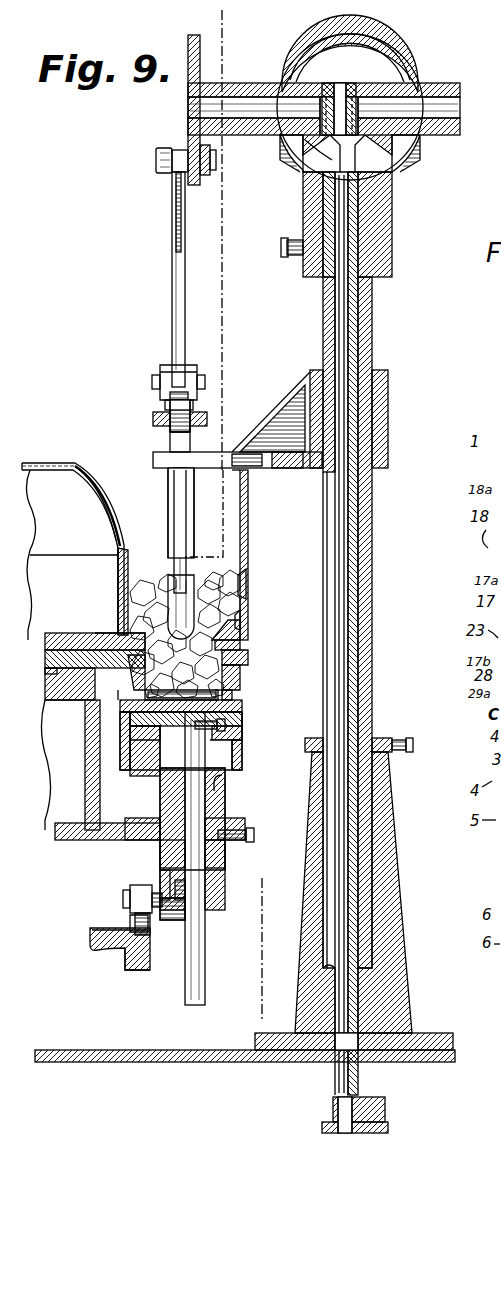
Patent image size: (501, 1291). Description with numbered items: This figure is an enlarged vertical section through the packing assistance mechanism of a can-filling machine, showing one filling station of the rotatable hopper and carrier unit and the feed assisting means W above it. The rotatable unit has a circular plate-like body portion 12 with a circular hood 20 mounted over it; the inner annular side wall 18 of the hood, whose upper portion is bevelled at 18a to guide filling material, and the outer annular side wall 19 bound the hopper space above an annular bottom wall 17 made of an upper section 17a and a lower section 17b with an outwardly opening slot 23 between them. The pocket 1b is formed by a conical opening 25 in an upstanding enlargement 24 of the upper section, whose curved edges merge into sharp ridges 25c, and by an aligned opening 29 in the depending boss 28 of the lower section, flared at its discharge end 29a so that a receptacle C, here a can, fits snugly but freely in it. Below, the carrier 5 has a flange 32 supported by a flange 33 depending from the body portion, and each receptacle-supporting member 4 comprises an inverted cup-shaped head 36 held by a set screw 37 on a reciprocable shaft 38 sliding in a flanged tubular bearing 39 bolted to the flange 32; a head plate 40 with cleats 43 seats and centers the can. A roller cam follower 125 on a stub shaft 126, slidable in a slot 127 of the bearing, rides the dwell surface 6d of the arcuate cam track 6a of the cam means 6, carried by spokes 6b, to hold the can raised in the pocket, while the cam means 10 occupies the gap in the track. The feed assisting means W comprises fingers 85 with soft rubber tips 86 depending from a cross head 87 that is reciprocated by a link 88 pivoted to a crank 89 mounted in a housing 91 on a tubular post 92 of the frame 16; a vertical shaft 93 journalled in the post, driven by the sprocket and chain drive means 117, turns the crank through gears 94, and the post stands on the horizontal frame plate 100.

The cam means 10 is at (226, 18).
The housing 91 is at (410, 62).
The gears 94 is at (353, 132).
The crank 89 is at (188, 134).
The link 88 is at (174, 294).
The vertical shaft 93 is at (340, 308).
The tubular post 92 is at (372, 308).
The cross head 87 is at (160, 420).
The feed assisting means W is at (168, 492).
The circular hood 20 is at (30, 463).
The bevelled upper portion 18a is at (108, 498).
The fingers 85 is at (177, 545).
The outer annular side wall 19 is at (248, 514).
The inner annular side wall 18 is at (126, 566).
The sharp edges or ridges 25c is at (212, 590).
The annular bottom wall 17 is at (56, 630).
The upper bottom wall section 17a is at (102, 638).
The lower bottom wall section 17b is at (102, 660).
The circular plate-like body portion 12 is at (46, 672).
The conical openings 25 is at (234, 598).
The pockets 1b is at (240, 618).
The circumferential enlargement 24 is at (240, 628).
The slot 23 is at (245, 648).
The openings 29 is at (248, 658).
The depending boss 28 is at (240, 670).
The flared discharge ends 29a is at (232, 686).
The flexible tips 86 is at (145, 662).
The receptacles C is at (118, 695).
The cleats 43 is at (120, 705).
The head plate 40 is at (245, 713).
The set screw 37 is at (232, 727).
The flange 33 is at (86, 769).
The receptacle-supporting members 4 is at (232, 762).
The inverted cup-shaped head 36 is at (228, 775).
The reciprocable shaft 38 is at (195, 796).
The carrier 5 is at (252, 836).
The flange 32 is at (116, 839).
The flanged tubular bearing 39 is at (210, 862).
The cam followers 125 is at (130, 888).
The slots 127 is at (180, 886).
The dwell surface 6d is at (130, 914).
The stub shafts 126 is at (170, 906).
The spokes 6b is at (100, 950).
The cam means 6 is at (120, 956).
The arcuate cam track 6a is at (145, 970).
The horizontal frame plate 100 is at (150, 1062).
The frame structure 16 is at (455, 1056).
The sprocket and chain drive means 117 is at (322, 1128).